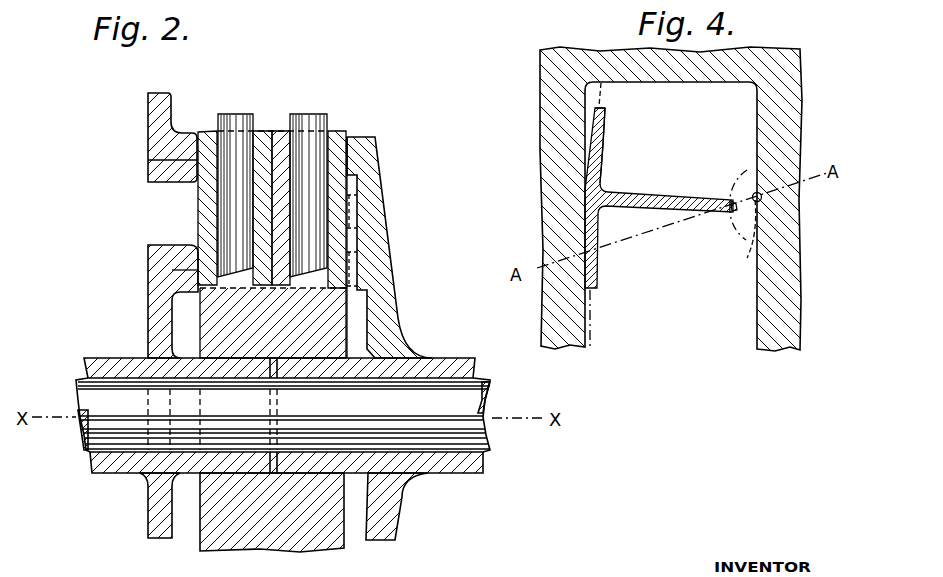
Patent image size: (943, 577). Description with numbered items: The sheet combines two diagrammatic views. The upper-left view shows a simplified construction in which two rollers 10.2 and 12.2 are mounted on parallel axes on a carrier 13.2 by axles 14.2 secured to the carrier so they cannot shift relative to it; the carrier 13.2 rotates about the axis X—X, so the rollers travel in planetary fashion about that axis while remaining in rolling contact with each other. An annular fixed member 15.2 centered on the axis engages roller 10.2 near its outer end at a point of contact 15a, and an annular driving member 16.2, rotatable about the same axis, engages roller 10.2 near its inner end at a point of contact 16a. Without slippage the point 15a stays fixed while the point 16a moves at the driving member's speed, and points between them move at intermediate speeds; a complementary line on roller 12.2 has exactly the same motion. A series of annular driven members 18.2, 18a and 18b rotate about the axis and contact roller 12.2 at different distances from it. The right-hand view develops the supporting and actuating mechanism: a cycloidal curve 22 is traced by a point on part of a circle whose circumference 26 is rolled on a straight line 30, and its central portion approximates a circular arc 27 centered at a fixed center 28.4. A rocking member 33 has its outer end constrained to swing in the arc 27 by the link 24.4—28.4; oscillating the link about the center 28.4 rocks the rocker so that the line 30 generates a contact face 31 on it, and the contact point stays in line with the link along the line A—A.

In FIG. 2, the roller 10.2 is at (203, 132).
In FIG. 2, the roller 12.2 is at (342, 131).
In FIG. 2, the carrier 13.2 is at (333, 321).
In FIG. 2, the axles 14.2 is at (308, 114).
In FIG. 2, the annular fixed member 15.2 is at (157, 147).
In FIG. 2, the point of contact 15a is at (197, 163).
In FIG. 2, the annular driving member 16.2 is at (160, 283).
In FIG. 2, the point of contact 16a is at (197, 267).
In FIG. 2, the annular driven member 18.2 is at (352, 162).
In FIG. 2, the annular driven member 18a is at (360, 215).
In FIG. 2, the annular driven member 18b is at (360, 273).
In FIG. 4, the cycloidal curve 22 is at (738, 160).
In FIG. 4, the link end 24.4 is at (738, 238).
In FIG. 4, the circumference 26 is at (592, 326).
In FIG. 4, the circular arc 27 is at (738, 215).
In FIG. 4, the fixed center 28.4 is at (764, 203).
In FIG. 4, the straight line 30 is at (588, 134).
In FIG. 4, the contact face 31 is at (596, 112).
In FIG. 4, the rocking member 33 is at (601, 161).